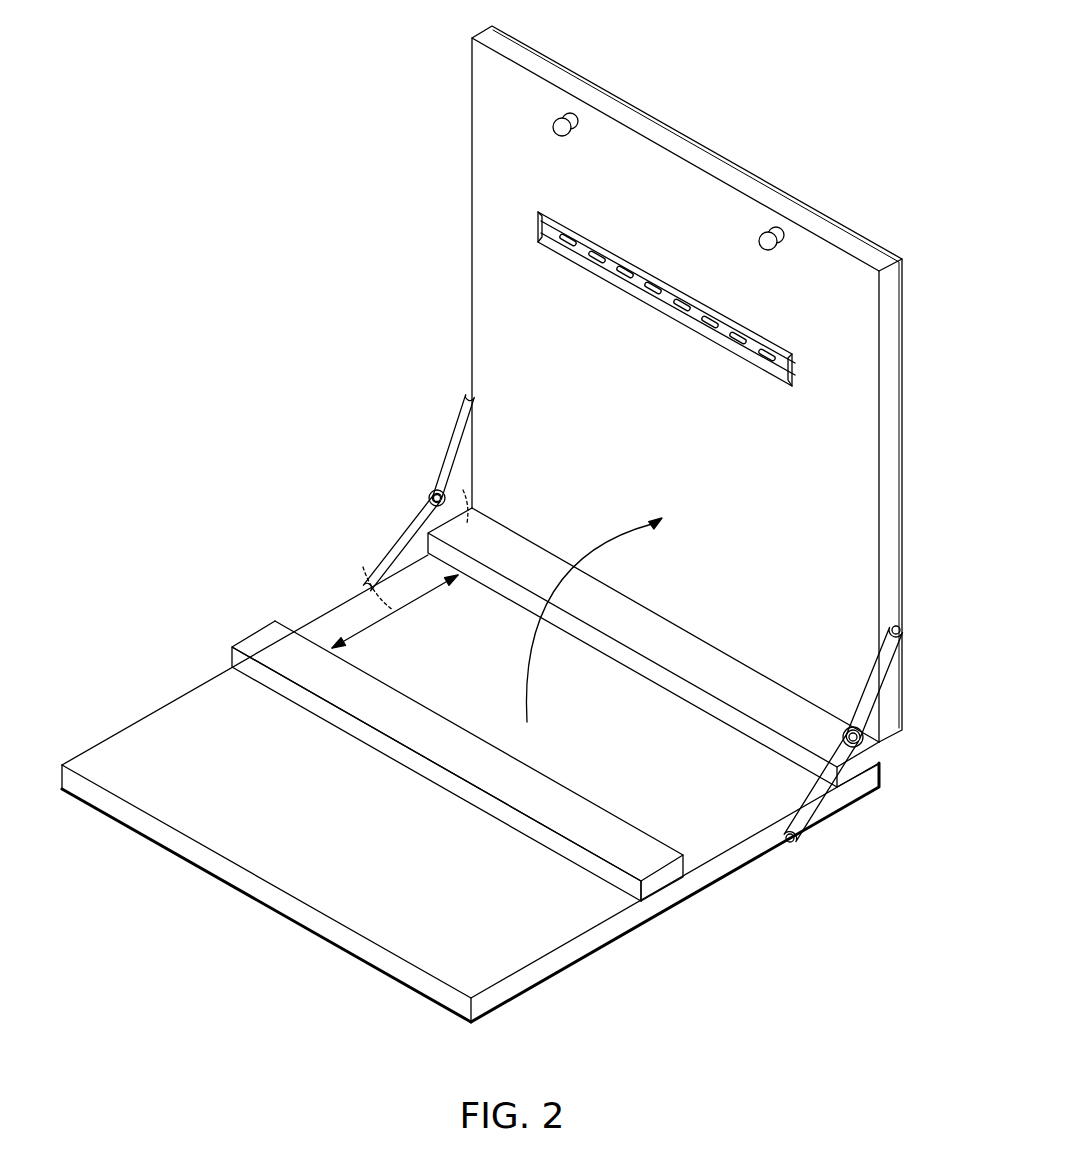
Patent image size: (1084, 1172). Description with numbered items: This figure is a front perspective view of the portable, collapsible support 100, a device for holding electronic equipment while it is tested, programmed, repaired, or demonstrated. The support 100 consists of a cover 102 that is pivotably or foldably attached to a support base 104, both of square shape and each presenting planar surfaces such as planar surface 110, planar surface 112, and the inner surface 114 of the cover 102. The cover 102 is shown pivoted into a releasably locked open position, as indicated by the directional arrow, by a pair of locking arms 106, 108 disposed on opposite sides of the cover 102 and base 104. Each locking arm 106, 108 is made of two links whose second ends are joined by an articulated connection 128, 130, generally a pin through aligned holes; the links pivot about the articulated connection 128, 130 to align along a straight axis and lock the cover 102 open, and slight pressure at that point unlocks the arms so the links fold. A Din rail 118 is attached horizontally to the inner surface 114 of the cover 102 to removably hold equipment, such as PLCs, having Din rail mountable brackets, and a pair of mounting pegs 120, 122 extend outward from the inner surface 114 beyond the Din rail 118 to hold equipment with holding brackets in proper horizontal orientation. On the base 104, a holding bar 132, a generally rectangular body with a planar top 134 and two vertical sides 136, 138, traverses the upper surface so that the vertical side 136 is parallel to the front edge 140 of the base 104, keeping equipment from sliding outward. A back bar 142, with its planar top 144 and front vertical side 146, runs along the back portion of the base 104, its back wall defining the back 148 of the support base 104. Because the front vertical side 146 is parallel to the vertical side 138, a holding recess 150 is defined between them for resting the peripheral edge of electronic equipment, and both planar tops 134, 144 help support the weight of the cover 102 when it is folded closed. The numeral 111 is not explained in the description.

The portable, collapsible support 100 is at (322, 145).
The cover 102 is at (468, 162).
The support base 104 is at (298, 935).
The locking arm 106 is at (806, 830).
The locking arm 108 is at (448, 435).
The planar surface 110 is at (904, 535).
The upper surface of base 111 is at (240, 708).
The planar surface 112 is at (97, 806).
The inner surface 114 is at (858, 494).
The Din rail 118 is at (537, 216).
The mounting peg 120 is at (578, 124).
The mounting peg 122 is at (782, 238).
The articulated connection 128 is at (862, 736).
The articulated connection 130 is at (433, 496).
The holding bar 132 is at (670, 880).
The planar top 134 is at (638, 866).
The vertical side 136 is at (607, 873).
The vertical side 138 is at (690, 868).
The front edge 140 is at (160, 836).
The back bar 142 is at (860, 785).
The planar top 144 is at (466, 498).
The front vertical side 146 is at (444, 548).
The back 148 is at (875, 765).
The holding recess 150 is at (392, 610).